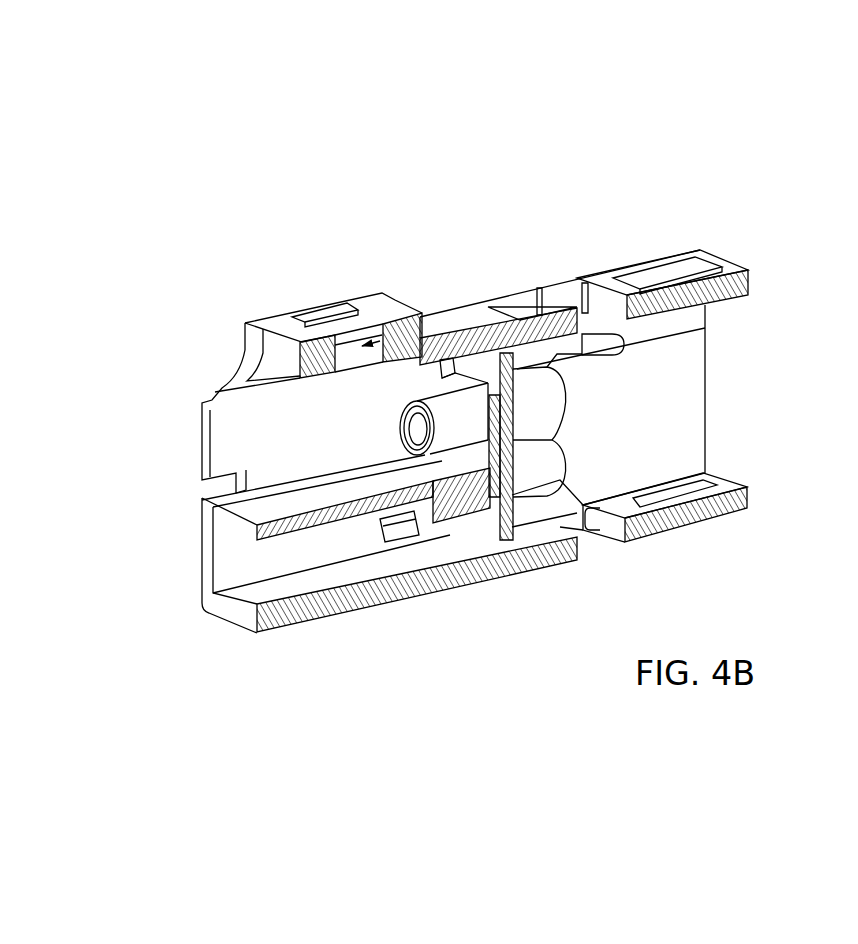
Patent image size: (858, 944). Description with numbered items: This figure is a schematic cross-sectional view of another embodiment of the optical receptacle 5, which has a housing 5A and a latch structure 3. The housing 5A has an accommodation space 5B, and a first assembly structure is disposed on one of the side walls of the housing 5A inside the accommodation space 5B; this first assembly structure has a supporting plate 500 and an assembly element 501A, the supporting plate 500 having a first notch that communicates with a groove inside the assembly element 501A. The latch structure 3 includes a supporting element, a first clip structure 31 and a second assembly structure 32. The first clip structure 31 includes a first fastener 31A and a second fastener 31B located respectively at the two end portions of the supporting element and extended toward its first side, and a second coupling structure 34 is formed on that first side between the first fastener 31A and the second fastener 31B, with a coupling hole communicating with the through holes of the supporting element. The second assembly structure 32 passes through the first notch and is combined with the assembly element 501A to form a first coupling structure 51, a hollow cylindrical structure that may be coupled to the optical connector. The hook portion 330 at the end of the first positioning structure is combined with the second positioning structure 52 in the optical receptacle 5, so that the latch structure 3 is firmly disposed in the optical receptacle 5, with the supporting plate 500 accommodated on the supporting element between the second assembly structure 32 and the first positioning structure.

The latch structure 3 is at (589, 325).
The optical receptacle 5 is at (253, 322).
The housing 5A is at (459, 317).
The accommodation space 5B is at (669, 427).
The first clip structure 31 is at (555, 350).
The first fastener 31A is at (614, 335).
The second fastener 31B is at (693, 525).
The second assembly structure 32 is at (445, 396).
The second coupling structure 34 is at (543, 391).
The first coupling structure 51 is at (397, 408).
The second positioning structure 52 is at (430, 521).
The hook portion 330 is at (388, 523).
The supporting plate 500 is at (540, 570).
The assembly element 501A is at (455, 420).